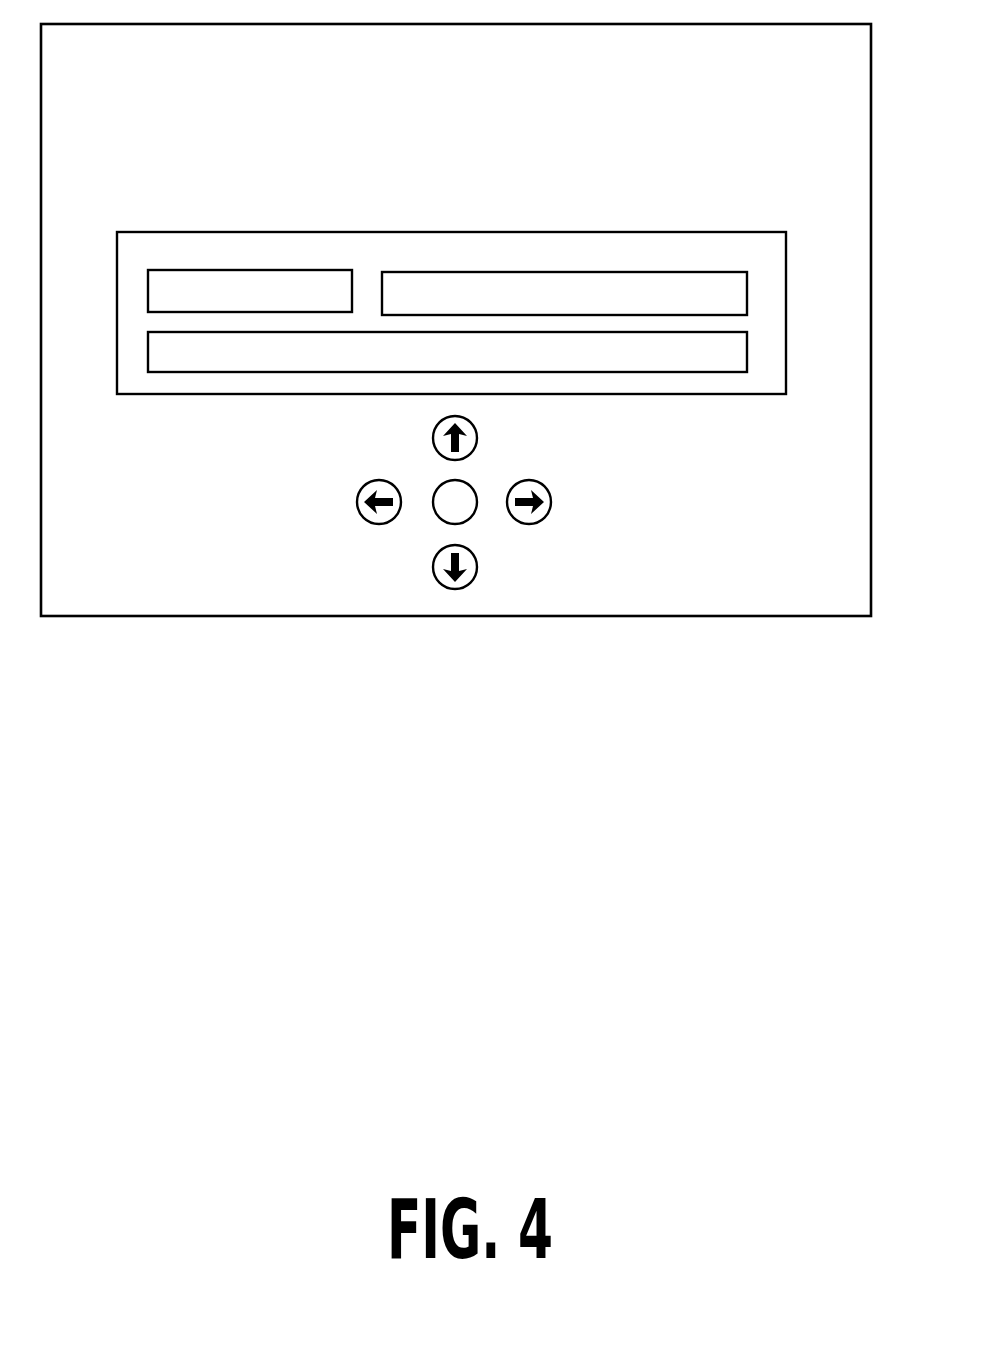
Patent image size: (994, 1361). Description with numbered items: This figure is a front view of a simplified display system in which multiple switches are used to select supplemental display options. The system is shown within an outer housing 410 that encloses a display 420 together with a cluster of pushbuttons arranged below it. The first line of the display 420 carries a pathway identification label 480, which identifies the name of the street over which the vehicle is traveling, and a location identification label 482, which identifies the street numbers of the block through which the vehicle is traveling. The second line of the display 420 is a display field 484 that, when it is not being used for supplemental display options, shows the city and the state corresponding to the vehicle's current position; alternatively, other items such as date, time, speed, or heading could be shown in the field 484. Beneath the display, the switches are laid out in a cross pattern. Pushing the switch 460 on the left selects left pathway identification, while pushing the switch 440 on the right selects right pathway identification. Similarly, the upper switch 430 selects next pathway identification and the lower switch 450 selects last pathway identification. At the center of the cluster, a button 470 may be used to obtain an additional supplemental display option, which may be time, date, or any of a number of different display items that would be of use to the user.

The display device housing 410 is at (847, 618).
The display 420 is at (788, 331).
The switch 430 is at (431, 438).
The switch 440 is at (553, 502).
The switch 450 is at (431, 567).
The switch 460 is at (355, 502).
The button 470 is at (473, 488).
The pathway identification label 480 is at (216, 268).
The location identification label 482 is at (456, 270).
The display field 484 is at (704, 366).